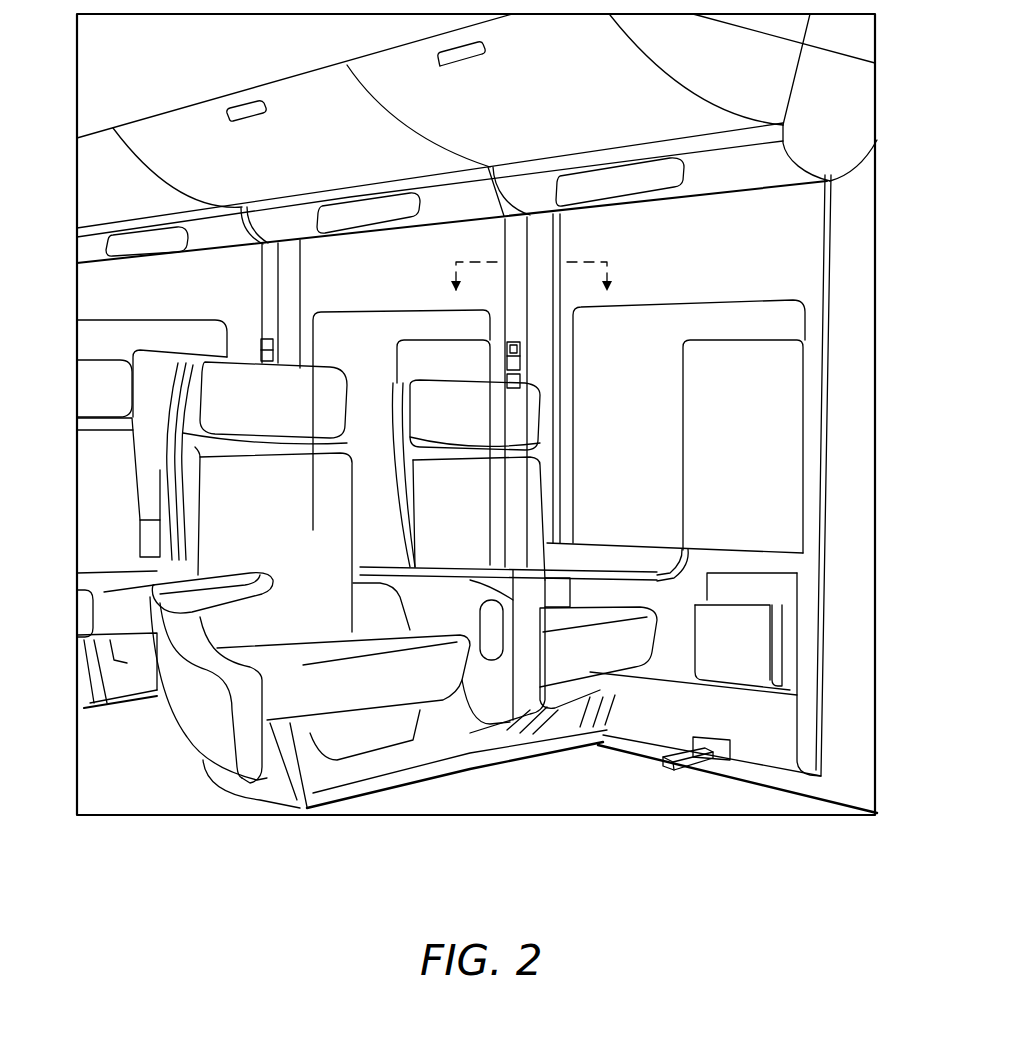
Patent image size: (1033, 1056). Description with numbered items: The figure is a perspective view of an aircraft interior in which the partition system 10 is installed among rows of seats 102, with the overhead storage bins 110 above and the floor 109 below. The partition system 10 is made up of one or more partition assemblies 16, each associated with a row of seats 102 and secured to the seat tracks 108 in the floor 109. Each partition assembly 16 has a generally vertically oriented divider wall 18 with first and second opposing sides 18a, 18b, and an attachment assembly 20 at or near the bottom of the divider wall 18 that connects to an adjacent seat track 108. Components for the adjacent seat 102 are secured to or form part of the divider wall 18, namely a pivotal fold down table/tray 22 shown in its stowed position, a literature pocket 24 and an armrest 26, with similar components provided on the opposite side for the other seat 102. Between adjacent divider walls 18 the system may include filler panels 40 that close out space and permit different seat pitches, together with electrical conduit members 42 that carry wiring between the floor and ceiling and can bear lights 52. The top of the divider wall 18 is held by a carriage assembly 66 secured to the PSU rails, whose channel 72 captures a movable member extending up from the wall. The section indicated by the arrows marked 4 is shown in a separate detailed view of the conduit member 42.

The partition system 10 is at (58, 292).
The partition assembly 16 is at (866, 244).
The divider wall 18 is at (818, 331).
The first surface or side 18a is at (181, 294).
The second surface or side 18b is at (832, 208).
The attachment assembly 20 is at (708, 774).
The fold down table/tray 22 is at (426, 360).
The literature pocket 24 is at (757, 636).
The armrest 26 is at (370, 540).
The filler panel 40 is at (548, 240).
The electrical conduit member 42 is at (512, 236).
The lights 52 is at (264, 338).
The carriage assembly 66 is at (805, 196).
The channel 72 is at (830, 172).
The seats 102 is at (612, 655).
The seat tracks 108 is at (780, 792).
The floor 109 is at (497, 796).
The overhead storage bins 110 is at (306, 162).
The section line 4 is at (533, 300).